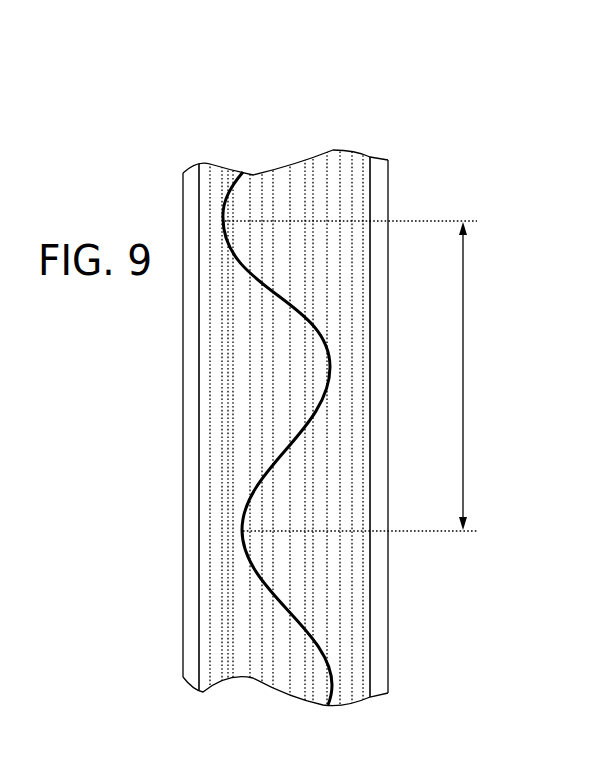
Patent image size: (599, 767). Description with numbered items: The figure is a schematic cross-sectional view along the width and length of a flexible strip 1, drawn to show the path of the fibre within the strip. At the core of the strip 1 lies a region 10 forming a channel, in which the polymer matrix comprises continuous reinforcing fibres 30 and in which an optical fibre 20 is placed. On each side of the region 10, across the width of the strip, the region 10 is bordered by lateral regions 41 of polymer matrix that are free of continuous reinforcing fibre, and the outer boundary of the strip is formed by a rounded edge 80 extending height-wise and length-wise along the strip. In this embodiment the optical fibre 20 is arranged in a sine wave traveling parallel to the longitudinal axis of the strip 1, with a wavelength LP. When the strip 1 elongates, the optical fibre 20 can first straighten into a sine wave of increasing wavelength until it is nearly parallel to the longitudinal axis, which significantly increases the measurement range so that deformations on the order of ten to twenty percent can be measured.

The flexible strip 1 is at (167, 368).
The region 10 is at (340, 138).
The optical fibre 20 is at (270, 468).
The continuous reinforcing fibres 30 is at (222, 543).
The lateral region 41 is at (192, 197).
The edge 80 is at (180, 620).